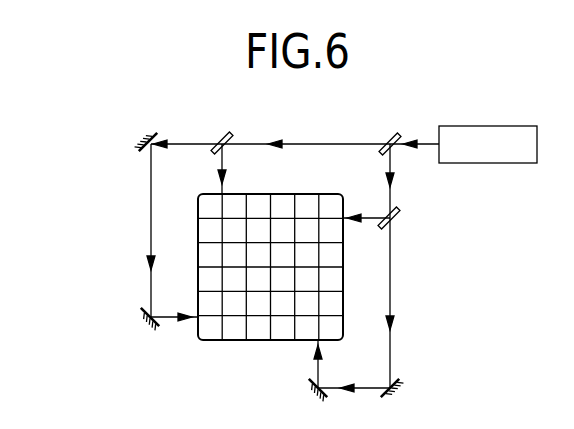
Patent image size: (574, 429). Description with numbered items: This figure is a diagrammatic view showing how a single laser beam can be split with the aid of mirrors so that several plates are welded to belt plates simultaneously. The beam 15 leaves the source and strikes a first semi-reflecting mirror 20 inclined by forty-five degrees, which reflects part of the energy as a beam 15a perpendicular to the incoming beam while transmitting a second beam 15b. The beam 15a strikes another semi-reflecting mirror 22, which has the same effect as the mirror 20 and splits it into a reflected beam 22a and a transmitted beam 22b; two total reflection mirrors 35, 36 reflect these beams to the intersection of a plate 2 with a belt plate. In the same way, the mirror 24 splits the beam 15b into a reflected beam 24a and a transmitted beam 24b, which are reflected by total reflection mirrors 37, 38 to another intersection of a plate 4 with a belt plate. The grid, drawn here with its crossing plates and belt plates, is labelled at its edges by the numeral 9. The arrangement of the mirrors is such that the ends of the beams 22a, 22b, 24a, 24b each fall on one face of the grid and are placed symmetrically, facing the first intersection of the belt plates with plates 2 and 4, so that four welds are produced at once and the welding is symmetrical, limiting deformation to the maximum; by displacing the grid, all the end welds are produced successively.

The plate 2 is at (245, 232).
The plate 4 is at (283, 240).
The grid lines 9 is at (250, 193).
The beam 15 is at (405, 146).
The beam 15a is at (392, 170).
The beam 15b is at (307, 143).
The first semi-reflecting mirror 20 is at (395, 134).
The semi-reflecting mirror 22 is at (398, 217).
The reflected beam 22a is at (368, 219).
The transmitted beam 22b is at (392, 350).
The mirror 24 is at (220, 135).
The reflected beam 24a is at (222, 162).
The transmitted beam 24b is at (148, 233).
The total reflection mirror 35 is at (395, 395).
The total reflection mirror 36 is at (313, 395).
The total reflection mirror 37 is at (148, 138).
The total reflection mirror 38 is at (143, 326).